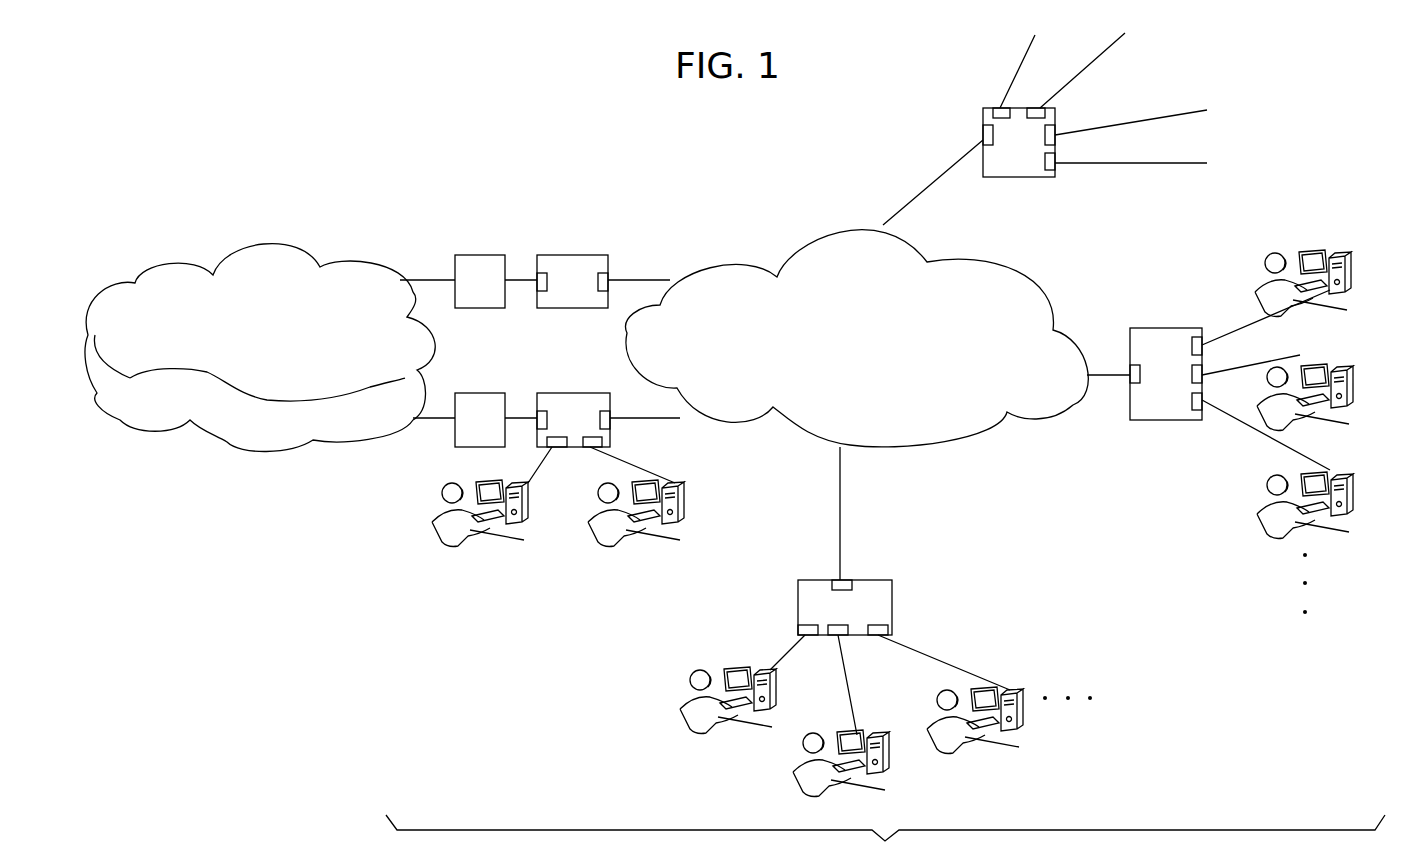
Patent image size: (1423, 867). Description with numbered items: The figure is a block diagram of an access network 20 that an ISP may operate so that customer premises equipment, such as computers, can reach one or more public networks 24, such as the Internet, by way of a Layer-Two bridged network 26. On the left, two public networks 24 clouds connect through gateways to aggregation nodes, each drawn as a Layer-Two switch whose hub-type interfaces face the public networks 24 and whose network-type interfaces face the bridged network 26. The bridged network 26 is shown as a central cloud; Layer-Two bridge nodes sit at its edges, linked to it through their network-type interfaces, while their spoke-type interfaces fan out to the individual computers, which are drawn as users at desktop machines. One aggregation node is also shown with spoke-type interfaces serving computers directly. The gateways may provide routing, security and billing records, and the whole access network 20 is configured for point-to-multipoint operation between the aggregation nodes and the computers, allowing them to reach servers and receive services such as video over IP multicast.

The access network 20 is at (885, 841).
The public networks 24 is at (93, 347).
The Layer-2 bridged network 26 is at (792, 270).